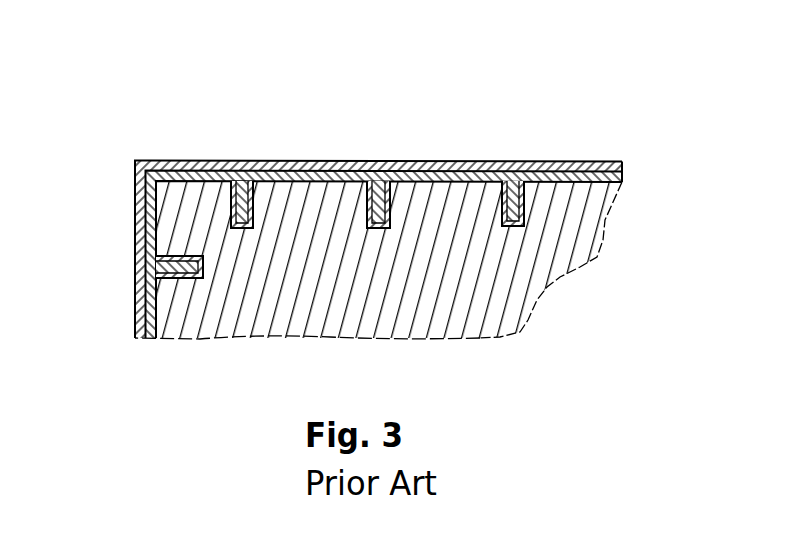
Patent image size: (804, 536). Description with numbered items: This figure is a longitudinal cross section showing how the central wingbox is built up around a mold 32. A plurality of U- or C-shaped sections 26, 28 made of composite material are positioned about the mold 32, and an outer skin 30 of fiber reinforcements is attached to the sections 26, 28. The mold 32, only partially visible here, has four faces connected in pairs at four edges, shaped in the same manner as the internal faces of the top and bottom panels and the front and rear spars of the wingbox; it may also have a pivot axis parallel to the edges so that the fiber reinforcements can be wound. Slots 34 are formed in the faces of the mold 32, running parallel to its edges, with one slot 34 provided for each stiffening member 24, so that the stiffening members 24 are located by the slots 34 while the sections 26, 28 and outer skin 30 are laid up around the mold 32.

The stiffening member 24 is at (372, 235).
The U- or C-shaped section 26 is at (305, 161).
The U- or C-shaped section 28 is at (148, 160).
The outer skin 30 is at (550, 158).
The mold 32 is at (417, 298).
The slot 34 is at (216, 161).